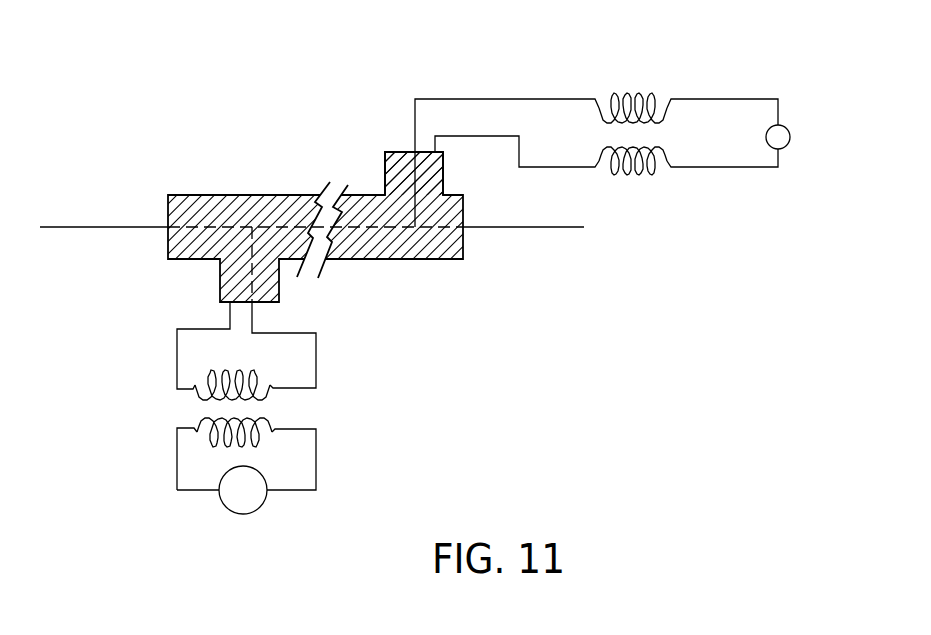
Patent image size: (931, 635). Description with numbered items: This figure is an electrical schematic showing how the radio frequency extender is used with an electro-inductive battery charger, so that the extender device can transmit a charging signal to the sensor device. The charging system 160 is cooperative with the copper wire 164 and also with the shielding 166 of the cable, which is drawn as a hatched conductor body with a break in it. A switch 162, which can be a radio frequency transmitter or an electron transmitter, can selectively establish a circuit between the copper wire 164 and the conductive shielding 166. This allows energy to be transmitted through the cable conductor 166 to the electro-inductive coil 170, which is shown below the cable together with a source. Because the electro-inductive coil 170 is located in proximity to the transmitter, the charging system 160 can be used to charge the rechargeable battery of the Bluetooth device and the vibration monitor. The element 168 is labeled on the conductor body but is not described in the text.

The charging system 160 is at (641, 123).
The switch 162 is at (708, 100).
The copper wire 164 is at (552, 228).
The conductive shielding 166 is at (452, 208).
The shaft 168 is at (313, 233).
The electro-inductive coil 170 is at (325, 411).